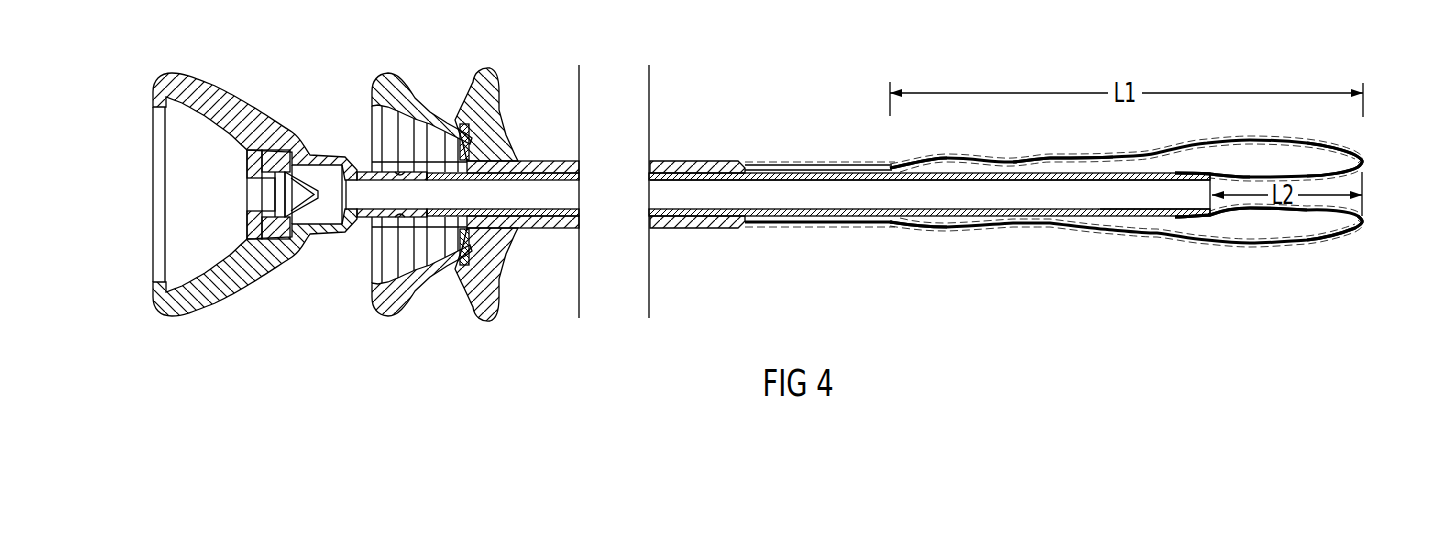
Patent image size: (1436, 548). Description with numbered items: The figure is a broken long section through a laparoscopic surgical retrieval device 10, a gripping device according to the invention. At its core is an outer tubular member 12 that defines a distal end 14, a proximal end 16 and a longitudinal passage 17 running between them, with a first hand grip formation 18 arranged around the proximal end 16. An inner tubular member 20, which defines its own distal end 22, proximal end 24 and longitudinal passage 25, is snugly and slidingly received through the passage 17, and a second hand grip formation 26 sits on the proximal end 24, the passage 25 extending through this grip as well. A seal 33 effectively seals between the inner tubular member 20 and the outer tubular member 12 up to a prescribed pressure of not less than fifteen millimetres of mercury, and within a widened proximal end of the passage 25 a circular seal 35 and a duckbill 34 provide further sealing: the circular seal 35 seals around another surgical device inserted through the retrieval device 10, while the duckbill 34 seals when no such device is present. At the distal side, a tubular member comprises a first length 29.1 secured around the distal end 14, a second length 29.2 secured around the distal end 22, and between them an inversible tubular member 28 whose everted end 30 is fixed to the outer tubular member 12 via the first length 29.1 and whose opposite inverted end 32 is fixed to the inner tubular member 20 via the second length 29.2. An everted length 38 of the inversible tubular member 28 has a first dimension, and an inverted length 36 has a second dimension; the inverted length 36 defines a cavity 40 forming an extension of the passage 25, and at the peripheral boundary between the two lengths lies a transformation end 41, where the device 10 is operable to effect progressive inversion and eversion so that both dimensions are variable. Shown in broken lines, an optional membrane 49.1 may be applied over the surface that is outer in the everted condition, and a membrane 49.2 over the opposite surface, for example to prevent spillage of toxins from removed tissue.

The retrieval device 10 is at (907, 77).
The outer tubular member 12 is at (674, 161).
The distal end 14 is at (890, 222).
The proximal end 16 is at (503, 233).
The longitudinal passage 17 is at (541, 168).
The first hand grip formation 18 is at (410, 102).
The inner tubular member 20 is at (688, 219).
The distal end 22 is at (1212, 203).
The proximal end 24 is at (363, 220).
The longitudinal passage 25 is at (810, 206).
The second hand grip formation 26 is at (203, 90).
The inversible tubular member 28 is at (1122, 157).
The first length 29.1 is at (778, 164).
The second length 29.2 is at (1155, 173).
The everted end 30 is at (893, 167).
The inverted end 32 is at (1210, 167).
The seal 33 is at (425, 262).
The duckbill 34 is at (297, 222).
The circular seal 35 is at (267, 176).
The inverted length 36 is at (1315, 180).
The everted length 38 is at (1052, 160).
The cavity 40 is at (1364, 182).
The transformation end 41 is at (1363, 214).
The membrane 49.1 is at (1105, 231).
The membrane 49.2 is at (1028, 203).